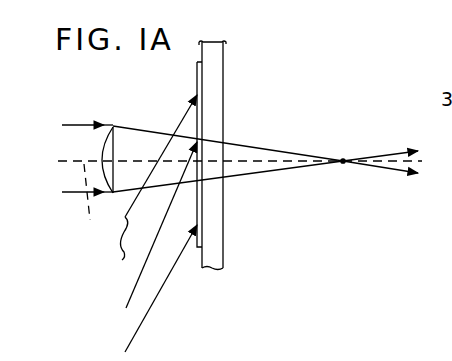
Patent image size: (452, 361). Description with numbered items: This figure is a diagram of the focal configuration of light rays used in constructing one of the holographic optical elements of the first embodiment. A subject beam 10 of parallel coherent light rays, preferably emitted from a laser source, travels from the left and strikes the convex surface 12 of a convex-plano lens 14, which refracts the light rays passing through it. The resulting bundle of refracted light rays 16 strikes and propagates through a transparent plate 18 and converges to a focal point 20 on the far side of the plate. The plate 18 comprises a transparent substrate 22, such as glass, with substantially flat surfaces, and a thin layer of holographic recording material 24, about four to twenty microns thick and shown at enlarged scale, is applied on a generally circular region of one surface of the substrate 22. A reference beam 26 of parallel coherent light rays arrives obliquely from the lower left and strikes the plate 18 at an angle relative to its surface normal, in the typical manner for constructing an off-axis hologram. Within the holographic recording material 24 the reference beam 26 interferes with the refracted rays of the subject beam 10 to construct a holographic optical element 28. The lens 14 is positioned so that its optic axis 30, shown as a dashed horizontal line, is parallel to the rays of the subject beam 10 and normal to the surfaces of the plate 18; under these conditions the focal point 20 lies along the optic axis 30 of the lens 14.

The subject beam 10 is at (73, 124).
The convex surface 12 is at (105, 136).
The convex-plano lens 14 is at (110, 140).
The refracted light rays 16 is at (268, 146).
The transparent plate 18 is at (223, 52).
The focal point 20 is at (343, 160).
The transparent substrate 22 is at (213, 80).
The holographic recording material 24 is at (197, 67).
The reference beam 26 is at (130, 296).
The holographic optical element 28 is at (190, 92).
The optic axis 30 is at (92, 204).